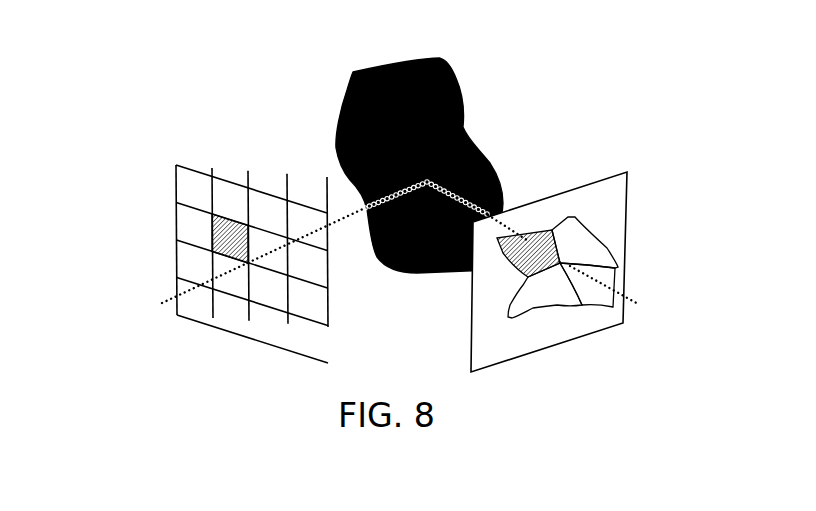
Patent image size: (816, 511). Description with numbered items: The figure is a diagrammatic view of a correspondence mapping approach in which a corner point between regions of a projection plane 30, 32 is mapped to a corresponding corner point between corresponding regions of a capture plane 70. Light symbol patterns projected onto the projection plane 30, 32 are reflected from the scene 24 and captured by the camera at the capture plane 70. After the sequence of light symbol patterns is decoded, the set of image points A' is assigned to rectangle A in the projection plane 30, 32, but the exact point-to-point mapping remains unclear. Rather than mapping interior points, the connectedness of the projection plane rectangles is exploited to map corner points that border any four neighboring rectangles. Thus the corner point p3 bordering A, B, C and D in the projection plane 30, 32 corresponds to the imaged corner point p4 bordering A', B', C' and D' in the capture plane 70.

The scene 24 is at (474, 72).
The projector / projection plane 30 is at (177, 223).
The projected pattern grid on projection plane 32 is at (179, 265).
The capture plane 70 is at (624, 237).
The corner point p3 is at (248, 263).
The imaged corner point p4 is at (560, 262).